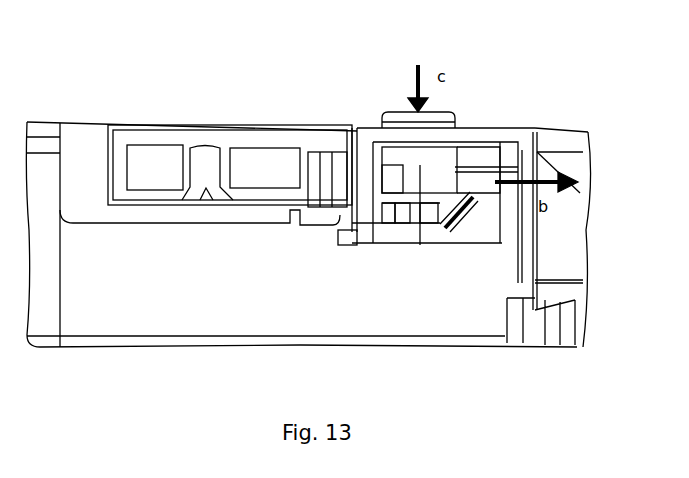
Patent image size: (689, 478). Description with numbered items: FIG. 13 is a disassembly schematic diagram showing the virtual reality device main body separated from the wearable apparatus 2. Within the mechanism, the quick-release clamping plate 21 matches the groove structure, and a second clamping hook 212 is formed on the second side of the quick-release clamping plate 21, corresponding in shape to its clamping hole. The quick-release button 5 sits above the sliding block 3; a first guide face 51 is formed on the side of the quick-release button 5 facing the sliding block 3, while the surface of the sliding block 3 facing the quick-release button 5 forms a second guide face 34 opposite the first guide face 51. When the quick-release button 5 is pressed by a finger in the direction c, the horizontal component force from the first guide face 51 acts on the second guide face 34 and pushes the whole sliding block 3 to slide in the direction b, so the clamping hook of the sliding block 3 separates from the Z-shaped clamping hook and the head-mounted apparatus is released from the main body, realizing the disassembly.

The wearable apparatus 2 is at (188, 128).
The sliding block 3 is at (362, 222).
The quick-release button 5 is at (400, 112).
The quick-release clamping plate 21 is at (155, 192).
The second clamping hook 212 is at (317, 215).
The first guide face 51 is at (492, 172).
The second guide face 34 is at (470, 195).